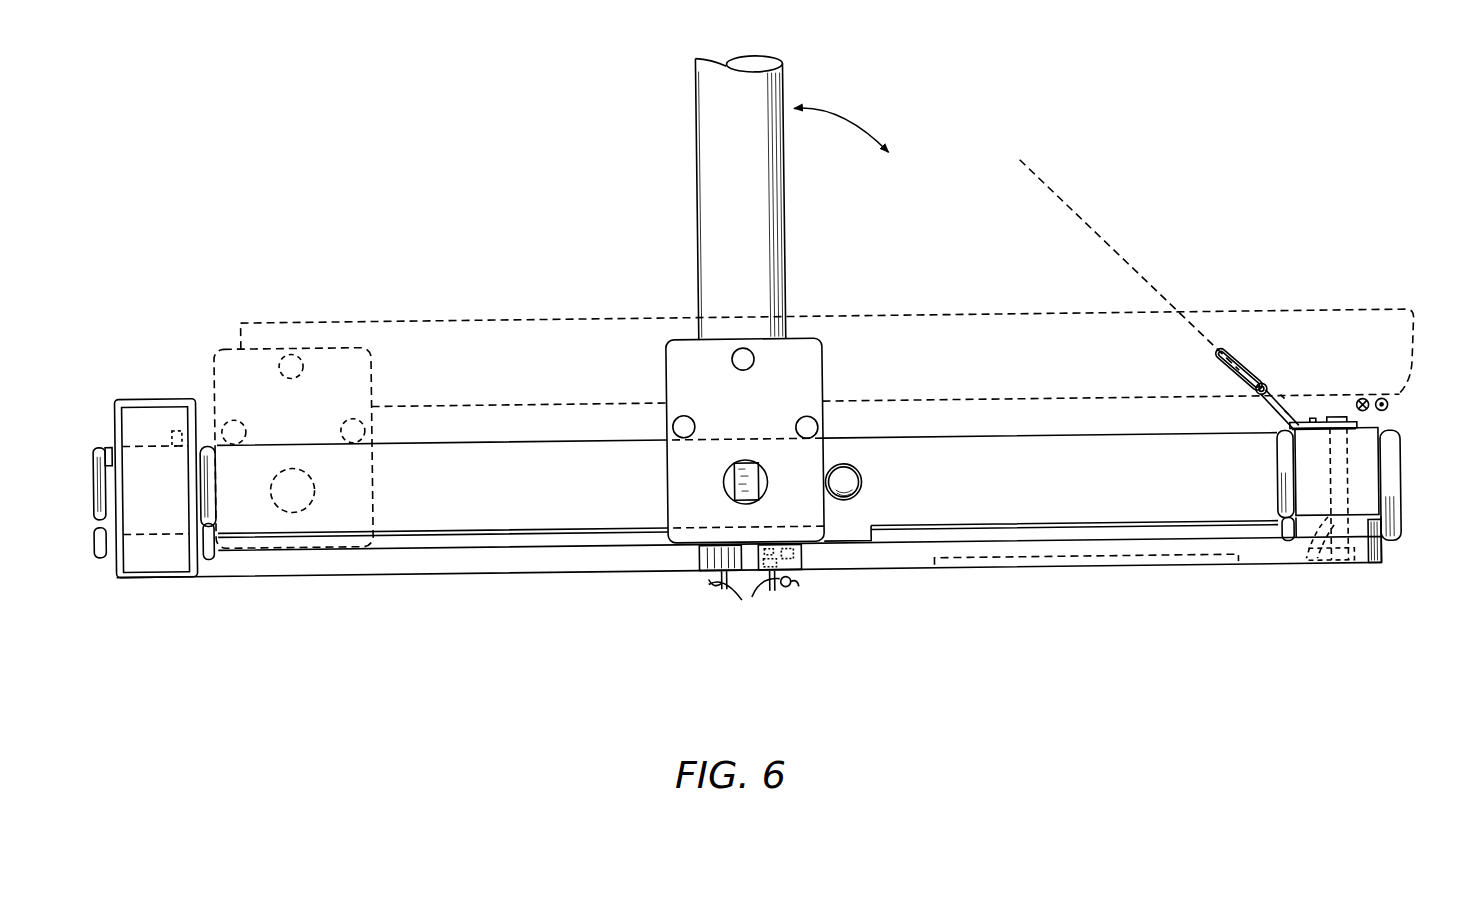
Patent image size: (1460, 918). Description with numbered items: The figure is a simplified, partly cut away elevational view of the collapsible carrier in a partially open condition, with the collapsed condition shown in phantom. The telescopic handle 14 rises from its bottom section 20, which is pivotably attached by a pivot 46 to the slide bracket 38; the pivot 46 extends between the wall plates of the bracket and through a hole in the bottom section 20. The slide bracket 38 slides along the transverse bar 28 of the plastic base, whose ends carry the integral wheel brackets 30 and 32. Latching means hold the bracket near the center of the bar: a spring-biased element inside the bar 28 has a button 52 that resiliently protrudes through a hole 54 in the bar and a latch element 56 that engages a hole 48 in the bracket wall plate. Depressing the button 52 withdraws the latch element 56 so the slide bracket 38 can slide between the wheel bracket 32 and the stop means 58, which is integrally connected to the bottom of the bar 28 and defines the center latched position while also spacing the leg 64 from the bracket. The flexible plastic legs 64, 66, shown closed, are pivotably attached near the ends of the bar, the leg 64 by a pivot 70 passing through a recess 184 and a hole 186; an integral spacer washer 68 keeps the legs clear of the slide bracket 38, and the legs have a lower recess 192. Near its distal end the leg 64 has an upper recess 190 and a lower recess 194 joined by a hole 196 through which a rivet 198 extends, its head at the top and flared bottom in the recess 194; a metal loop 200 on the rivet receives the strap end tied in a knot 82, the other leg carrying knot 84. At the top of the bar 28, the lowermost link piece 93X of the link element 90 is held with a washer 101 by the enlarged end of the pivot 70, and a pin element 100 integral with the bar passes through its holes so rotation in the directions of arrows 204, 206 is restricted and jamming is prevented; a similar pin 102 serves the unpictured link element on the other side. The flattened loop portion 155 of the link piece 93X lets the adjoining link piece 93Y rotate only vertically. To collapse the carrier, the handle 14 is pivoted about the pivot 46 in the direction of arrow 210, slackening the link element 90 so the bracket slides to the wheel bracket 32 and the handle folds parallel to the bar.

The telescopic handle 14 is at (706, 152).
The bottom section 20 is at (705, 185).
The transverse bar 28 is at (492, 437).
The wheel bracket 30 is at (1403, 472).
The wheel bracket 32 is at (207, 438).
The slide bracket 38 is at (221, 342).
The pivot 46 is at (293, 350).
The hole 48 is at (746, 465).
The button 52 is at (845, 469).
The hole 54 is at (860, 487).
The latch element 56 is at (759, 485).
The stop means 58 is at (856, 531).
The leg 64 is at (1252, 563).
The leg 66 is at (300, 572).
The spacer washer 68 is at (1376, 536).
The pivot 70 is at (1330, 575).
The knot 82 is at (790, 592).
The knot 84 is at (722, 592).
The link element 90 is at (1258, 365).
The lowermost link piece 93X is at (1287, 420).
The adjoining link piece 93Y is at (1283, 404).
The pin element 100 is at (1313, 425).
The washer 101 is at (1350, 429).
The pin 102 is at (172, 428).
The loop portion 155 is at (1297, 449).
The recess 184 is at (1316, 566).
The hole 186 is at (1307, 566).
The upper recess 190 is at (782, 533).
The lower recess 192 is at (973, 568).
The lower recess 194 is at (810, 570).
The hole 196 is at (805, 557).
The rivet 198 is at (790, 536).
The metal loop 200 is at (772, 600).
The arrow 204 is at (1368, 408).
The arrow 206 is at (1389, 409).
The arrow 210 is at (845, 122).